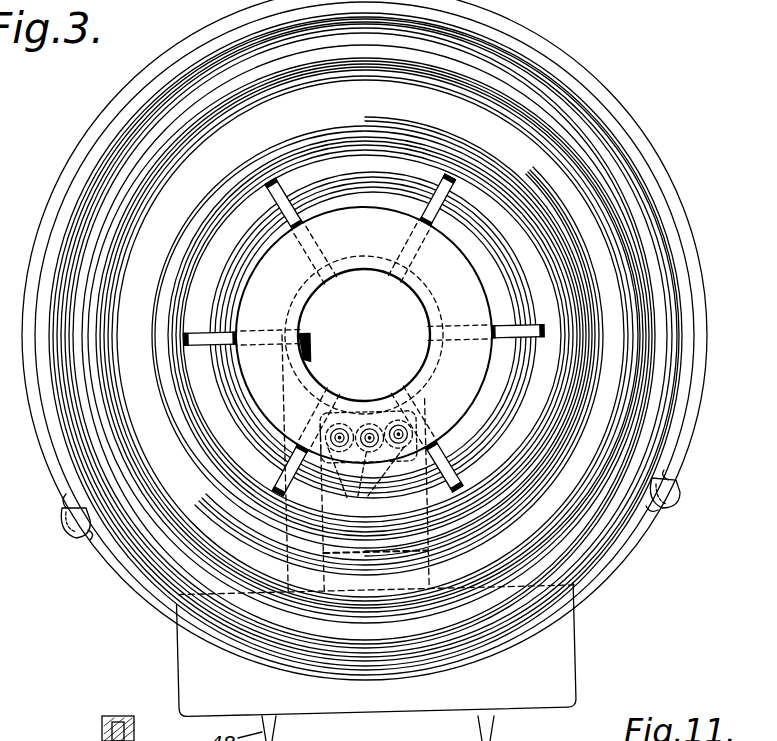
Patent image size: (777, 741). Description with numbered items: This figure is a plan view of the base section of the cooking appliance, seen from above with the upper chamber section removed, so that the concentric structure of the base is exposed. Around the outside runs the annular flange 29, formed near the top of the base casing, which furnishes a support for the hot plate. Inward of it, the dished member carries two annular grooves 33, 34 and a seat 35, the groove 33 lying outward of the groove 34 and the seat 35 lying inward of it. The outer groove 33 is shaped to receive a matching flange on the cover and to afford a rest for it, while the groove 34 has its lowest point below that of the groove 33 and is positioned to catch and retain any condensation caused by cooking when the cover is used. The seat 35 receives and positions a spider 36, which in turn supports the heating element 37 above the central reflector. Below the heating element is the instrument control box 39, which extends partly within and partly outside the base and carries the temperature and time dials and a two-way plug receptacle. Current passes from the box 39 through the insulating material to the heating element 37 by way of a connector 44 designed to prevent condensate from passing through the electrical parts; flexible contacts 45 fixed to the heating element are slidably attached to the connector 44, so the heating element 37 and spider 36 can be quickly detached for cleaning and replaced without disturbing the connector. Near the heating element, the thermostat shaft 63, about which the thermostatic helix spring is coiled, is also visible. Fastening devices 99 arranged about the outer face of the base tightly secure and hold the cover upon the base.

The annular flange 29 is at (694, 328).
The annular groove 33 is at (80, 424).
The annular groove 34 is at (365, 342).
The seat 35 is at (377, 346).
The spider 36 is at (285, 190).
The heating element 37 is at (352, 244).
The shaft 63 is at (307, 353).
The connector 44 is at (414, 432).
The flexible contacts 45 is at (367, 484).
The instrument control box 39 is at (168, 652).
The fastening devices 99 is at (70, 540).